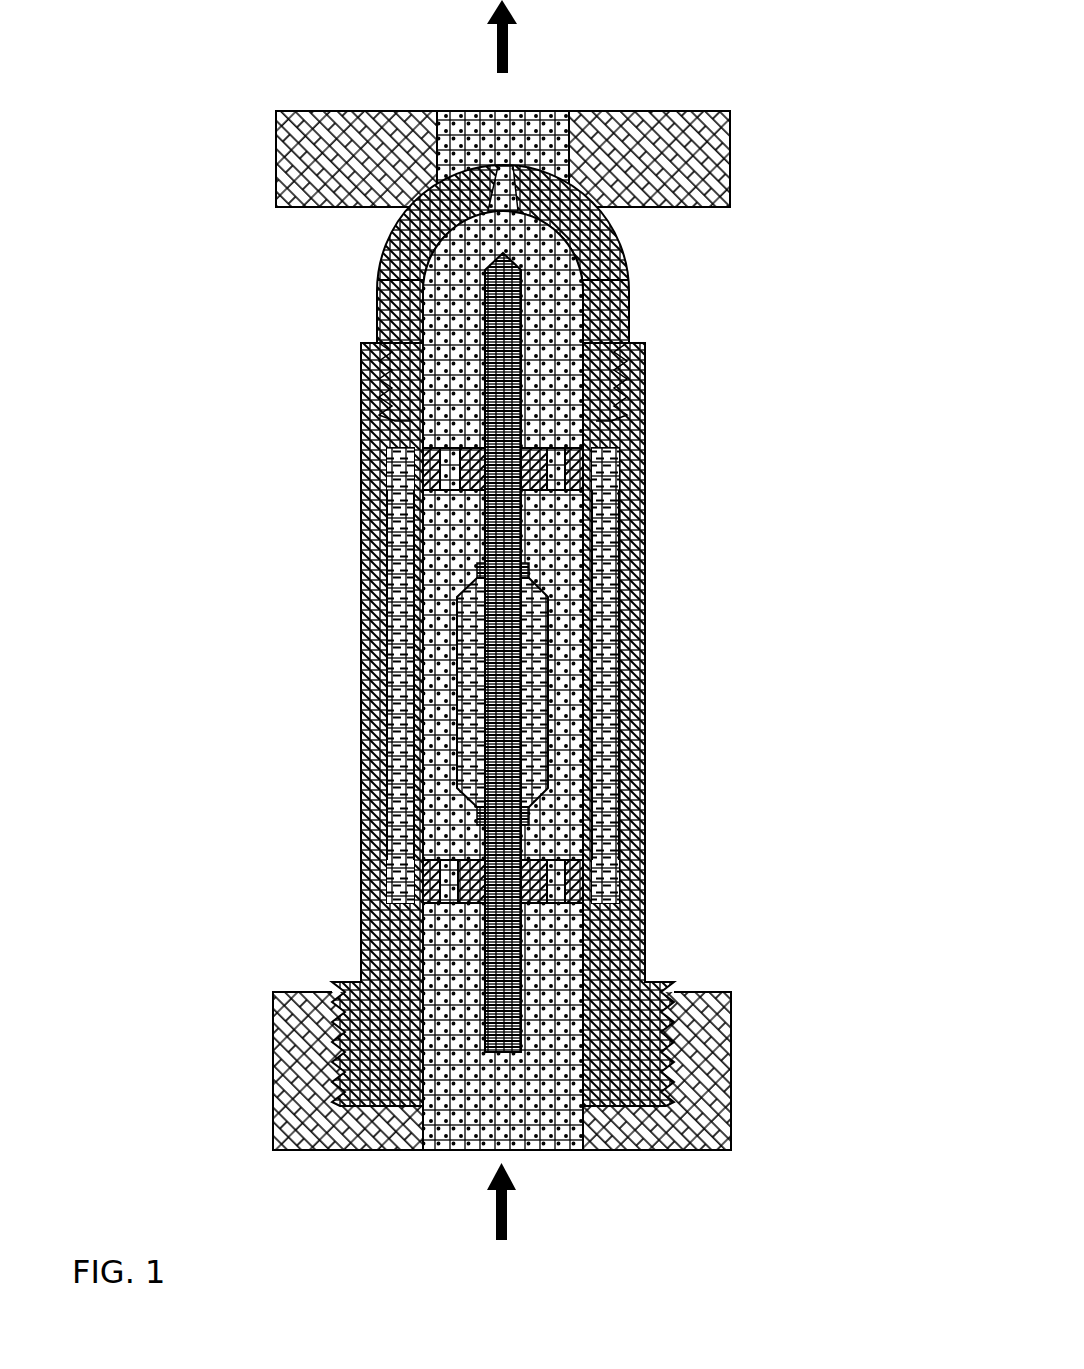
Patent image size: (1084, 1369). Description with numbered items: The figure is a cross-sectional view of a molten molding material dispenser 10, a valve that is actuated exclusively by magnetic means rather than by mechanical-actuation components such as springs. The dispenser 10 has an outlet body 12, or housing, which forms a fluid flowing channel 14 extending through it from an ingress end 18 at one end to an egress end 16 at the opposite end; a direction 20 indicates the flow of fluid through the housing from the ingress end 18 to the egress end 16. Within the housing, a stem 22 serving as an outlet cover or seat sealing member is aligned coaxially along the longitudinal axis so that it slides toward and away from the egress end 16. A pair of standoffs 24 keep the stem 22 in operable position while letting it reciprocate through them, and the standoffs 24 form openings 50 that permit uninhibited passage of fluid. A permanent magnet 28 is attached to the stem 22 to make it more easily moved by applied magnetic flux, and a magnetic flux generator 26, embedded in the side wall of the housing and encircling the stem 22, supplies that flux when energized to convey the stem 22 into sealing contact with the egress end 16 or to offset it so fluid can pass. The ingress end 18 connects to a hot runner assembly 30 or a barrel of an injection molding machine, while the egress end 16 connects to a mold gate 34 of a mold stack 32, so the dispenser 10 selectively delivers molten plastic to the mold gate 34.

The molten molding material dispenser 10 is at (863, 152).
The outlet body 12 is at (648, 385).
The fluid flowing channel 14 is at (460, 405).
The egress end 16 is at (505, 192).
The ingress end 18 is at (500, 1070).
The direction 20 is at (494, 1215).
The stem 22 is at (500, 520).
The pair of standoffs 24 is at (537, 880).
The magnetic flux generator 26 is at (405, 660).
The permanent magnet 28 is at (527, 715).
The hot runner assembly 30 is at (300, 1057).
The mold stack 32 is at (335, 165).
The mold gate 34 is at (528, 123).
The openings 50 is at (412, 875).